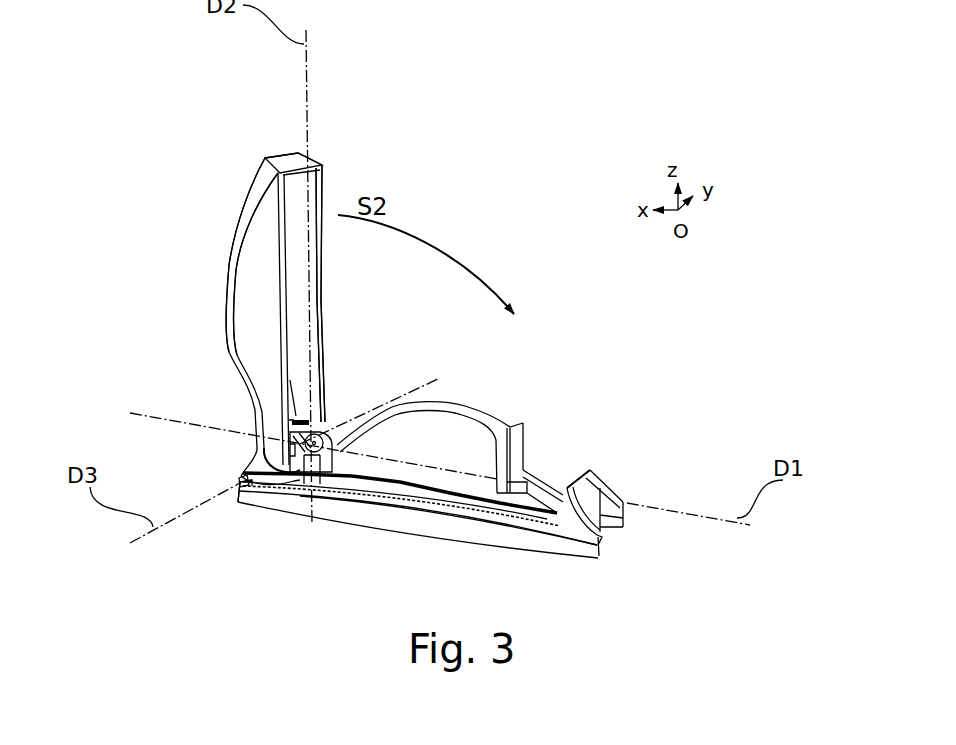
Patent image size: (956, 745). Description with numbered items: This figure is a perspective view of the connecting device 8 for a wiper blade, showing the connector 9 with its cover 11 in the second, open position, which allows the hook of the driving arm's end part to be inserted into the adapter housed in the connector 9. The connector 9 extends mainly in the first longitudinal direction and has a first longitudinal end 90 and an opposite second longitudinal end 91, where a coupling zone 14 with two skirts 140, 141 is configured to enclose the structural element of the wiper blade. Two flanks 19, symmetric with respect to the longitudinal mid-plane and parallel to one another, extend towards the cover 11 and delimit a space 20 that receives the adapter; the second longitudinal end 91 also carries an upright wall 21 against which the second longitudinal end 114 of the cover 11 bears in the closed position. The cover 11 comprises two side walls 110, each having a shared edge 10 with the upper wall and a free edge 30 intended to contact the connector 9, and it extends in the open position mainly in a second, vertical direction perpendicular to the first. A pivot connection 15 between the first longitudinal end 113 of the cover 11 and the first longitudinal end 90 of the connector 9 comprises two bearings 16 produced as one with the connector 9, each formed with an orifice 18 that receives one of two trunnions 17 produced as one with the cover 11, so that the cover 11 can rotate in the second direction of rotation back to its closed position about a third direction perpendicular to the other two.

The connecting device 8 is at (472, 433).
The connector 9 is at (450, 530).
The shared edge 10 is at (228, 297).
The cover 11 is at (264, 213).
The coupling zone 14 is at (612, 537).
The pivot connection 15 is at (270, 457).
The bearing 16 is at (332, 434).
The trunnion 17 is at (319, 430).
The orifice 18 is at (313, 480).
The flank 19 is at (477, 420).
The space 20 is at (462, 412).
The upright wall 21 is at (592, 474).
The free edge 30 is at (277, 310).
The first longitudinal end 90 is at (253, 498).
The second longitudinal end 91 is at (543, 549).
The side wall 110 is at (224, 245).
The first longitudinal end 113 is at (236, 454).
The second longitudinal end 114 is at (348, 162).
The skirt 140 is at (637, 507).
The skirt 141 is at (600, 538).